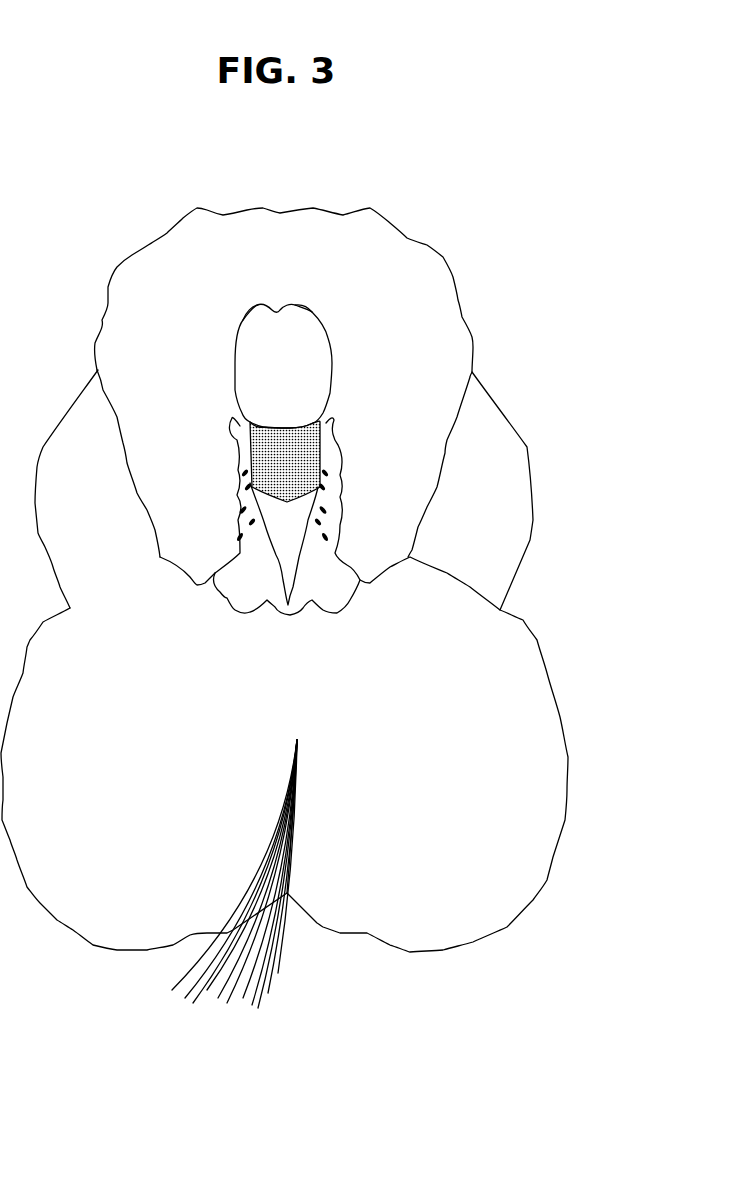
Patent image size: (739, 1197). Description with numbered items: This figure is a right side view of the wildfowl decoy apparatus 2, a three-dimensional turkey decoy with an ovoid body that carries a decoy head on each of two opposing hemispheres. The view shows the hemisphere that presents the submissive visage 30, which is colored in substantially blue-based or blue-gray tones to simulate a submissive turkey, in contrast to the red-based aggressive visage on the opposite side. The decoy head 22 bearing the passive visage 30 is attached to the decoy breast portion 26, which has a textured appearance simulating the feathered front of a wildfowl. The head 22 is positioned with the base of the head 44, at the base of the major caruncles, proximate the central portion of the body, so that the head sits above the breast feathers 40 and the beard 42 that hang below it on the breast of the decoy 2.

The wildfowl decoy apparatus 2 is at (447, 203).
The decoy head 22 is at (327, 582).
The decoy breast portion 26 is at (523, 757).
The submissive visage 30 is at (327, 420).
The breast feathers 40 is at (433, 908).
The beard 42 is at (207, 962).
The base of the head 44 is at (347, 600).